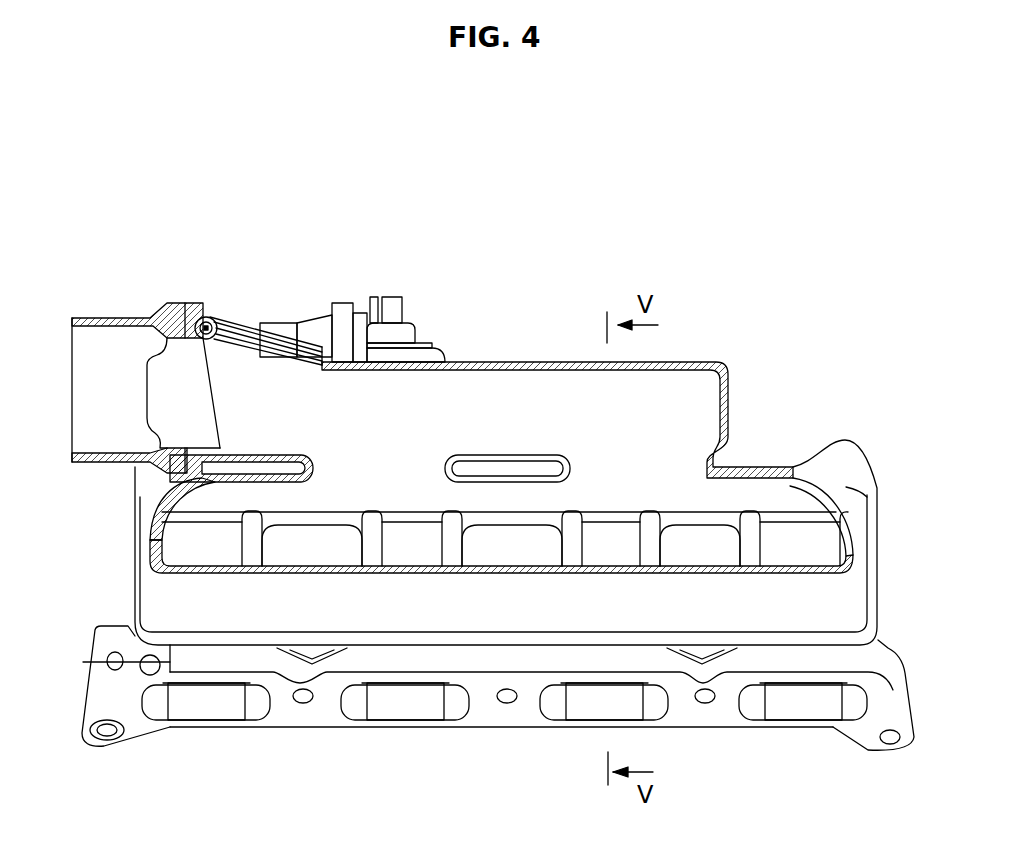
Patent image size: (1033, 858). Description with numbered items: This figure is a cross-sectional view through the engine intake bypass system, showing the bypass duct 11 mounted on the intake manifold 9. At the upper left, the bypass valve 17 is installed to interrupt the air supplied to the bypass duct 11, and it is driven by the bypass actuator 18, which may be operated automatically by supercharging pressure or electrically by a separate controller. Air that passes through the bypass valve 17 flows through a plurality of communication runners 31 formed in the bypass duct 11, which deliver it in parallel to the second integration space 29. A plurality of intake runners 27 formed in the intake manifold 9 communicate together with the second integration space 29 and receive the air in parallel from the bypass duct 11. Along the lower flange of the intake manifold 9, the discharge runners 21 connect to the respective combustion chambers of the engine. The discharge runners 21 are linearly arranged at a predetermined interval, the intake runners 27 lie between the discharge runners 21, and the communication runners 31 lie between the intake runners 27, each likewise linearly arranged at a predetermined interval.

The intake manifold 9 is at (890, 657).
The bypass duct 11 is at (563, 380).
The bypass valve 17 is at (240, 338).
The bypass actuator 18 is at (378, 288).
The discharge runners 21 is at (200, 702).
The intake runners 27 is at (715, 548).
The second integration space 29 is at (222, 493).
The communication runners 31 is at (417, 477).